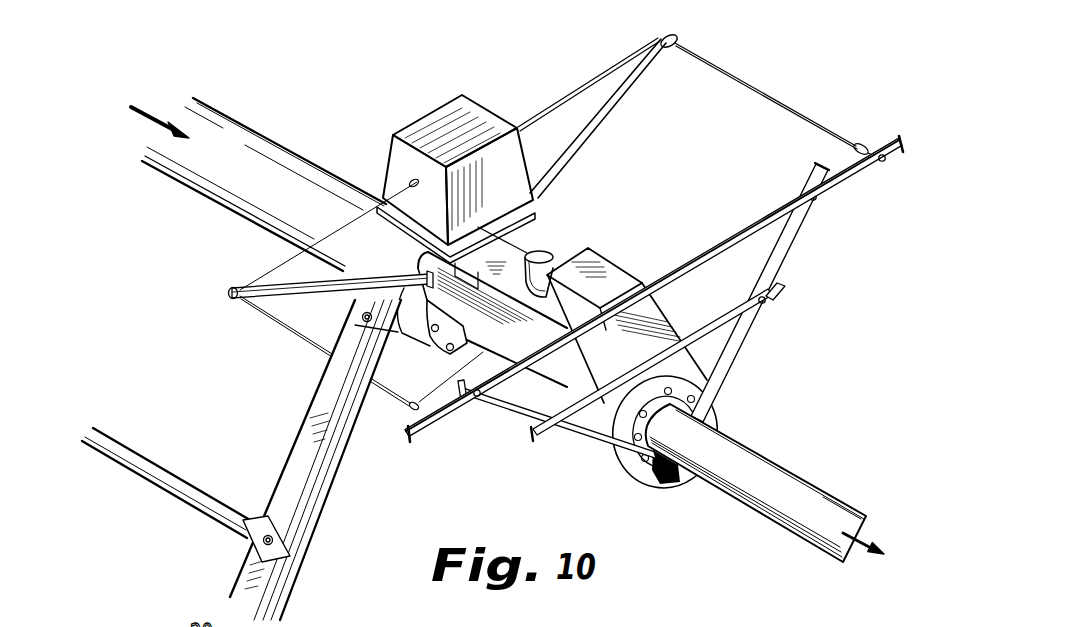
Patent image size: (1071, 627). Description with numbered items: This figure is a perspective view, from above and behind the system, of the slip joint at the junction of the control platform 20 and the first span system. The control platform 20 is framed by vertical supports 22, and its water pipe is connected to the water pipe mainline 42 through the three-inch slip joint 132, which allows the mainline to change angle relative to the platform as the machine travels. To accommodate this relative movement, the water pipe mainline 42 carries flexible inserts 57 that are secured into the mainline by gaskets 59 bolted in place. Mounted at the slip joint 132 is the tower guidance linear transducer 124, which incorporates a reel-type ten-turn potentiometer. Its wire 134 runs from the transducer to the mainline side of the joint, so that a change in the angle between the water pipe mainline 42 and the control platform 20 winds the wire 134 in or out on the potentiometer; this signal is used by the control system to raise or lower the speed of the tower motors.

The control platform 20 is at (290, 134).
The vertical supports 22 is at (333, 484).
The water pipe mainline 42 is at (711, 477).
The flexible inserts 57 is at (408, 408).
The gaskets 59 is at (433, 331).
The tower guidance linear transducer 124 is at (470, 113).
The slip joint 132 is at (551, 253).
The wire 134 is at (765, 90).